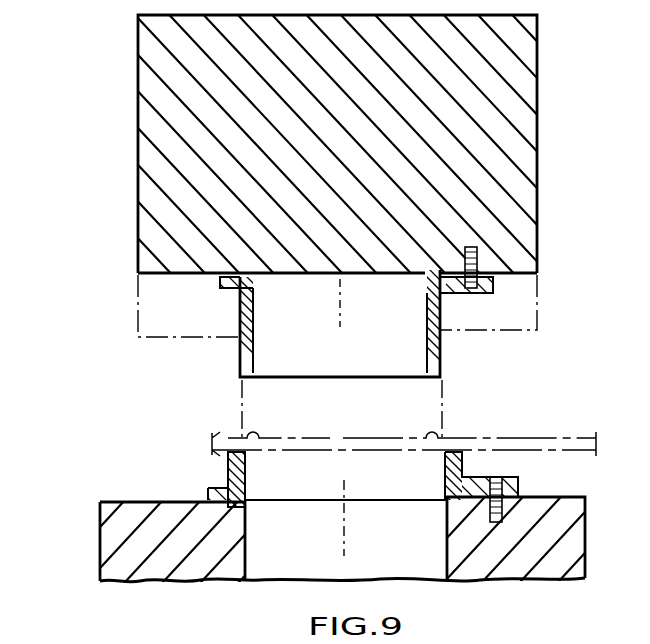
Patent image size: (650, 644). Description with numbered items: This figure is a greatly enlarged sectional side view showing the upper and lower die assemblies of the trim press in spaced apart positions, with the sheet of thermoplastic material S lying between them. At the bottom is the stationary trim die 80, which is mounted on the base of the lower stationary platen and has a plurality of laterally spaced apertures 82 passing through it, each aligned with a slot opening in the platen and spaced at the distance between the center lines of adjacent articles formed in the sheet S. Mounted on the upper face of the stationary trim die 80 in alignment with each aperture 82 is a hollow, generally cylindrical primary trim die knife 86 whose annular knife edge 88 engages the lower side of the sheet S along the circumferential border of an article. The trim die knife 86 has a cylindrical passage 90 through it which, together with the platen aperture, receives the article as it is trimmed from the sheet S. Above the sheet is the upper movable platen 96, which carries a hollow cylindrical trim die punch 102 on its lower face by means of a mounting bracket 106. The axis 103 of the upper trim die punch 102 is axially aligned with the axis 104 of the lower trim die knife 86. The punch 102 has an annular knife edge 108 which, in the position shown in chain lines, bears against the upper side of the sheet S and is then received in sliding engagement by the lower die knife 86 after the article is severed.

The upper platen 96 is at (549, 117).
The trim die punch 102 is at (441, 352).
The axis of trim die punch 103 is at (340, 306).
The mounting bracket 106 is at (494, 286).
The annular knife edge 108 is at (240, 378).
The sheet of thermoplastic material S is at (582, 436).
The stationary trim die 80 is at (100, 528).
The aperture 82 is at (247, 532).
The axis of trim die knife 104 is at (346, 538).
The primary trim die knife 86 is at (228, 471).
The annular knife edge 88 is at (246, 456).
The cylindrical passage 90 is at (455, 474).